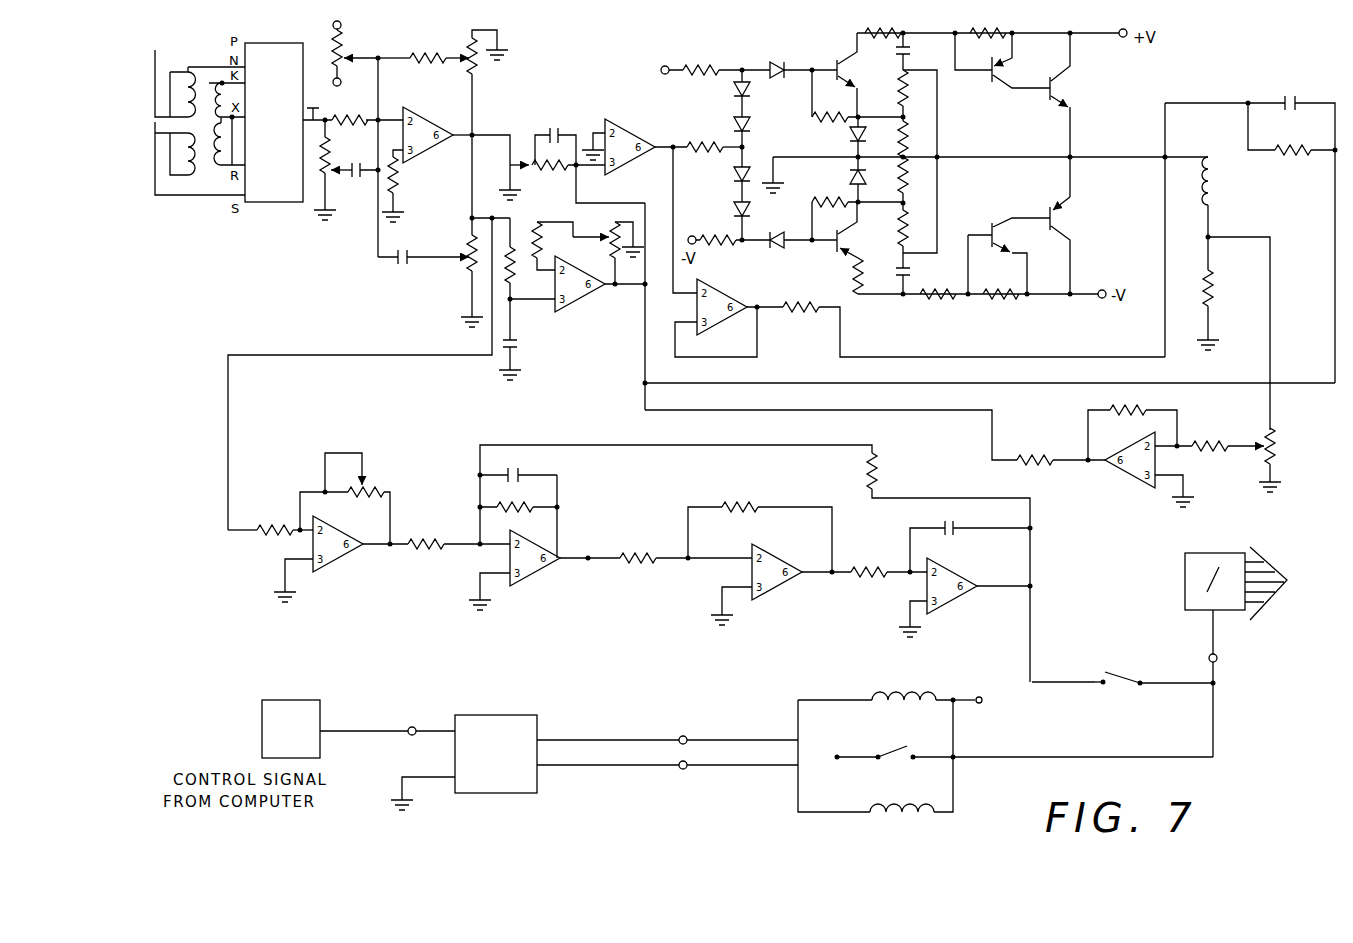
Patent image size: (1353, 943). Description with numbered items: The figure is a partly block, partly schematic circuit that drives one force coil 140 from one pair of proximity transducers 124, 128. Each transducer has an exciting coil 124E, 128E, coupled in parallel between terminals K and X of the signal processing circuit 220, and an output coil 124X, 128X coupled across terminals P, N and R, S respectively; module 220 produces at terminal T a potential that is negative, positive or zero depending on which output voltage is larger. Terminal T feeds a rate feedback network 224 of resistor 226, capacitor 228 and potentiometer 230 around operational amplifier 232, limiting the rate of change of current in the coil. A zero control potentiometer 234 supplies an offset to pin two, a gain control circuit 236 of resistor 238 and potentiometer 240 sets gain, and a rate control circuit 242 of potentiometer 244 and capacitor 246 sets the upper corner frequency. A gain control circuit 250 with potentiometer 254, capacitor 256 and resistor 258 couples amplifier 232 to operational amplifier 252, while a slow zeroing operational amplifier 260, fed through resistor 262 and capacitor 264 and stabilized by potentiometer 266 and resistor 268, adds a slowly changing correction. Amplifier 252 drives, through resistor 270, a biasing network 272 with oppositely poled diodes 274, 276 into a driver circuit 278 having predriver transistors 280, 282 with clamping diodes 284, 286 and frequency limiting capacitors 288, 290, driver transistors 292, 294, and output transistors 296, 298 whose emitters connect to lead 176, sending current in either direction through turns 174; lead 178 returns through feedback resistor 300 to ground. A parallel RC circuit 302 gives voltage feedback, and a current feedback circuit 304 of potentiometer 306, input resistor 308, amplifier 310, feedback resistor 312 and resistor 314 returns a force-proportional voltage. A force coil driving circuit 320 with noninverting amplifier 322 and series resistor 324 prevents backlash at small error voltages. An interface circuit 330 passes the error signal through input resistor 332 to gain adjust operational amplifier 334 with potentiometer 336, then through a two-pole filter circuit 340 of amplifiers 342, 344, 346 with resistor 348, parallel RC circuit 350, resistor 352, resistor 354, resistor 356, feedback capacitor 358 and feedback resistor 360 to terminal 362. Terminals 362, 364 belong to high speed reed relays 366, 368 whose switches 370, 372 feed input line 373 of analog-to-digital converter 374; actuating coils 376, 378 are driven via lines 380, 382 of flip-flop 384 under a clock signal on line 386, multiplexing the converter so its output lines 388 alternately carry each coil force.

The proximity transducer 124 is at (184, 118).
The output coil 124X is at (176, 84).
The exciting coil 124E is at (210, 92).
The proximity transducer 128 is at (196, 180).
The output coil 128X is at (172, 150).
The exciting coil 128E is at (216, 150).
The signal processing circuit 220 is at (296, 137).
The rate feedback network 224 is at (340, 223).
The resistor 226 is at (332, 124).
The capacitor 228 is at (361, 177).
The potentiometer 230 is at (350, 117).
The operational amplifier 232 is at (455, 100).
The zero control potentiometer 234 is at (350, 58).
The gain control circuit 236 is at (450, 40).
The resistor 238 is at (440, 62).
The potentiometer 240 is at (476, 64).
The rate control circuit 242 is at (456, 221).
The potentiometer 244 is at (466, 259).
The capacitor 246 is at (396, 268).
The gain control circuit 250 is at (546, 100).
The operational amplifier 252 is at (650, 85).
The potentiometer 254 is at (519, 167).
The capacitor 256 is at (555, 126).
The resistor 258 is at (550, 170).
The slow zeroing operational amplifier 260 is at (601, 306).
The resistor 262 is at (515, 266).
The capacitor 264 is at (518, 344).
The potentiometer 266 is at (618, 220).
The resistor 268 is at (548, 239).
The resistor 270 is at (709, 141).
The biasing network 272 is at (744, 48).
The diode 274 is at (789, 38).
The diode 276 is at (779, 249).
The driver circuit 278 is at (1001, 303).
The predriver transistor 280 is at (837, 63).
The predriver transistor 282 is at (836, 252).
The clamping diode 284 is at (850, 138).
The clamping diode 286 is at (850, 178).
The frequency limiting capacitor 288 is at (905, 51).
The frequency limiting capacitor 290 is at (908, 277).
The driver transistor 292 is at (989, 80).
The driver transistor 294 is at (1000, 221).
The output transistor 296 is at (1055, 85).
The output transistor 298 is at (1055, 216).
The feedback resistor 300 is at (1232, 279).
The parallel RC circuit 302 is at (1301, 93).
The current feedback circuit 304 is at (1073, 418).
The potentiometer 306 is at (1247, 432).
The input resistor 308 is at (1229, 444).
The amplifier 310 is at (1130, 476).
The feedback resistor 312 is at (1133, 406).
The resistor 314 is at (1048, 456).
The force coil driving circuit 320 is at (769, 338).
The operational amplifier 322 is at (697, 306).
The series resistor 324 is at (819, 316).
The interface circuit 330 is at (240, 623).
The input resistor 332 is at (276, 527).
The gain adjust operational amplifier 334 is at (333, 521).
The gain adjust potentiometer 336 is at (367, 478).
The two-pole filter circuit 340 is at (1056, 518).
The operational amplifier 342 is at (535, 579).
The operational amplifier 344 is at (774, 593).
The operational amplifier 346 is at (944, 607).
The resistor 348 is at (442, 512).
The parallel RC circuit 350 is at (564, 497).
The series resistor 352 is at (643, 567).
The resistor 354 is at (752, 500).
The resistor 356 is at (895, 533).
The feedback capacitor 358 is at (951, 519).
The feedback resistor 360 is at (880, 473).
The terminal 362 is at (1104, 688).
The terminal 364 is at (877, 761).
The high speed reed relay 366 is at (1123, 649).
The high speed reed relay 368 is at (862, 738).
The switch 370 is at (1104, 674).
The switch 372 is at (905, 736).
The input line 373 is at (1223, 661).
The analog-to-digital converter 374 is at (1193, 553).
The actuating coil 376 is at (903, 690).
The actuating coil 378 is at (893, 821).
The input line 380 is at (683, 735).
The input line 382 is at (685, 770).
The flip-flop 384 is at (508, 762).
The input line 386 is at (413, 726).
The output lines 388 is at (1243, 546).
The force coil 140 is at (1232, 94).
The turns 174 is at (1214, 191).
The lead 176 is at (1203, 156).
The lead 178 is at (1211, 225).